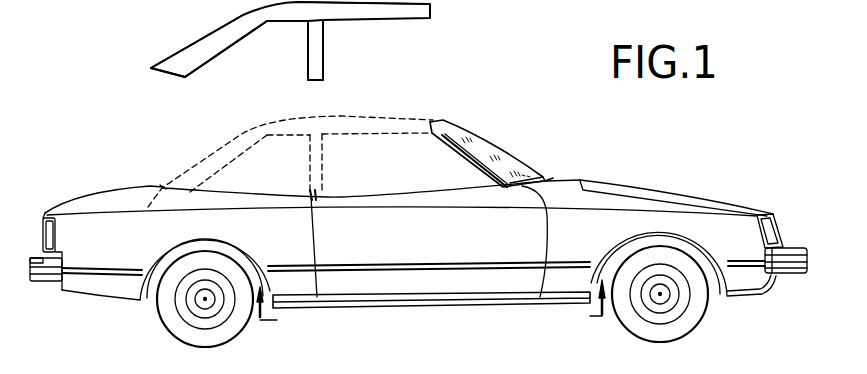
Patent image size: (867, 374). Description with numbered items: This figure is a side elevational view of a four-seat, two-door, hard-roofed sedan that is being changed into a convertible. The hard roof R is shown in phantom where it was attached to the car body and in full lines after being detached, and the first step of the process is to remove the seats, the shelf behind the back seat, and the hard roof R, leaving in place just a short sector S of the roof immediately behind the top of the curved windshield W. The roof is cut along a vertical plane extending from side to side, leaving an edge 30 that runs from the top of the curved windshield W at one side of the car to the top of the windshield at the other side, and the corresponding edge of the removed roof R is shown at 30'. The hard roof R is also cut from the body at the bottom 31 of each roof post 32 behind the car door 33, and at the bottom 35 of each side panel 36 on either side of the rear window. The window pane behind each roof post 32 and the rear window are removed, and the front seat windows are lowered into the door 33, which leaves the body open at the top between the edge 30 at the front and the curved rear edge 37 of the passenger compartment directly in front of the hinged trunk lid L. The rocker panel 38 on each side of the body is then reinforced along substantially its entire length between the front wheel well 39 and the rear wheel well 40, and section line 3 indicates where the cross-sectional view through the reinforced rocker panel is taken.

The edge 30 is at (290, 145).
The corresponding edge of the removed roof 30' is at (316, 41).
The bottom of roof post 31 is at (311, 80).
The roof post 32 is at (312, 52).
The car door 33 is at (377, 288).
The bottom of side panel 35 is at (168, 72).
The side panel 36 is at (210, 55).
The curved rear edge of the passenger compartment 37 is at (162, 188).
The rocker panel 38 is at (445, 305).
The front wheel well 39 is at (611, 262).
The rear wheel well 40 is at (252, 266).
The section line 3- 3 is at (431, 313).
The hinged trunk lid L is at (108, 188).
The hard roof R is at (357, 17).
The short sector of the roof S is at (443, 118).
The curved windshield W is at (502, 155).